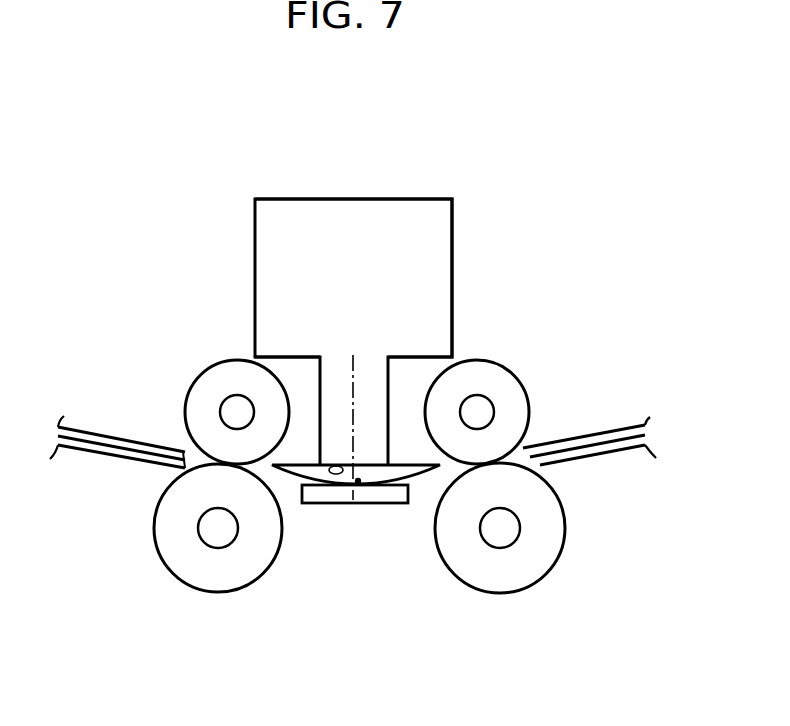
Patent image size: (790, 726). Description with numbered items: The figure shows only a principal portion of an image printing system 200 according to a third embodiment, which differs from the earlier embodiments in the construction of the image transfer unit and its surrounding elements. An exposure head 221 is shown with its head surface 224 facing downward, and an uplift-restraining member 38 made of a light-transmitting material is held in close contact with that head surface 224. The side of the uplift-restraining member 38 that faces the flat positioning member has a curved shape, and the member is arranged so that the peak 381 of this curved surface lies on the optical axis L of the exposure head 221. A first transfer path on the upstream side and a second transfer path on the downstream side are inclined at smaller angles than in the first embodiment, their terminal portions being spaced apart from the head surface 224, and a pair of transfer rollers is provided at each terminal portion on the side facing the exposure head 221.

The image printing system 200 is at (485, 83).
The exposure head 221 is at (422, 245).
The optical axis L is at (352, 372).
The uplift-restraining member 38 is at (418, 473).
The peak 381 is at (362, 482).
The head surface 224 is at (332, 466).